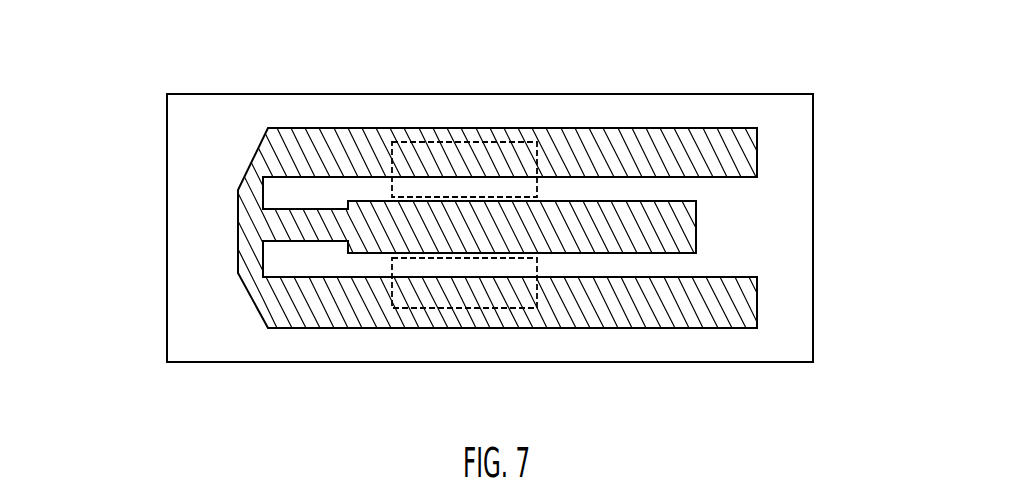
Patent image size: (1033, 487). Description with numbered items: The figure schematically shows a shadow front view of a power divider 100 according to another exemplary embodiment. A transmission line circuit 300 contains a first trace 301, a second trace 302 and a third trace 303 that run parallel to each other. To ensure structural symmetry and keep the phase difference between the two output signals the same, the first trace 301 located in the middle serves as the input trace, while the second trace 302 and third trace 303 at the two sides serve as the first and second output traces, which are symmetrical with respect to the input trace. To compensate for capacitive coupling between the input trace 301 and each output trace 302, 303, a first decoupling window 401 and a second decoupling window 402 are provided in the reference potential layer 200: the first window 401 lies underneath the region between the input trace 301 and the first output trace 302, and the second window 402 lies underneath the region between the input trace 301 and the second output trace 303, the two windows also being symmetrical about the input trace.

The power divider 100 is at (108, 85).
The reference potential layer 200 is at (192, 288).
The transmission line circuit 300 is at (560, 217).
The first trace 301 is at (700, 230).
The second trace 302 is at (760, 290).
The third trace 303 is at (762, 153).
The first decoupling window 401 is at (468, 138).
The second decoupling window 402 is at (447, 310).